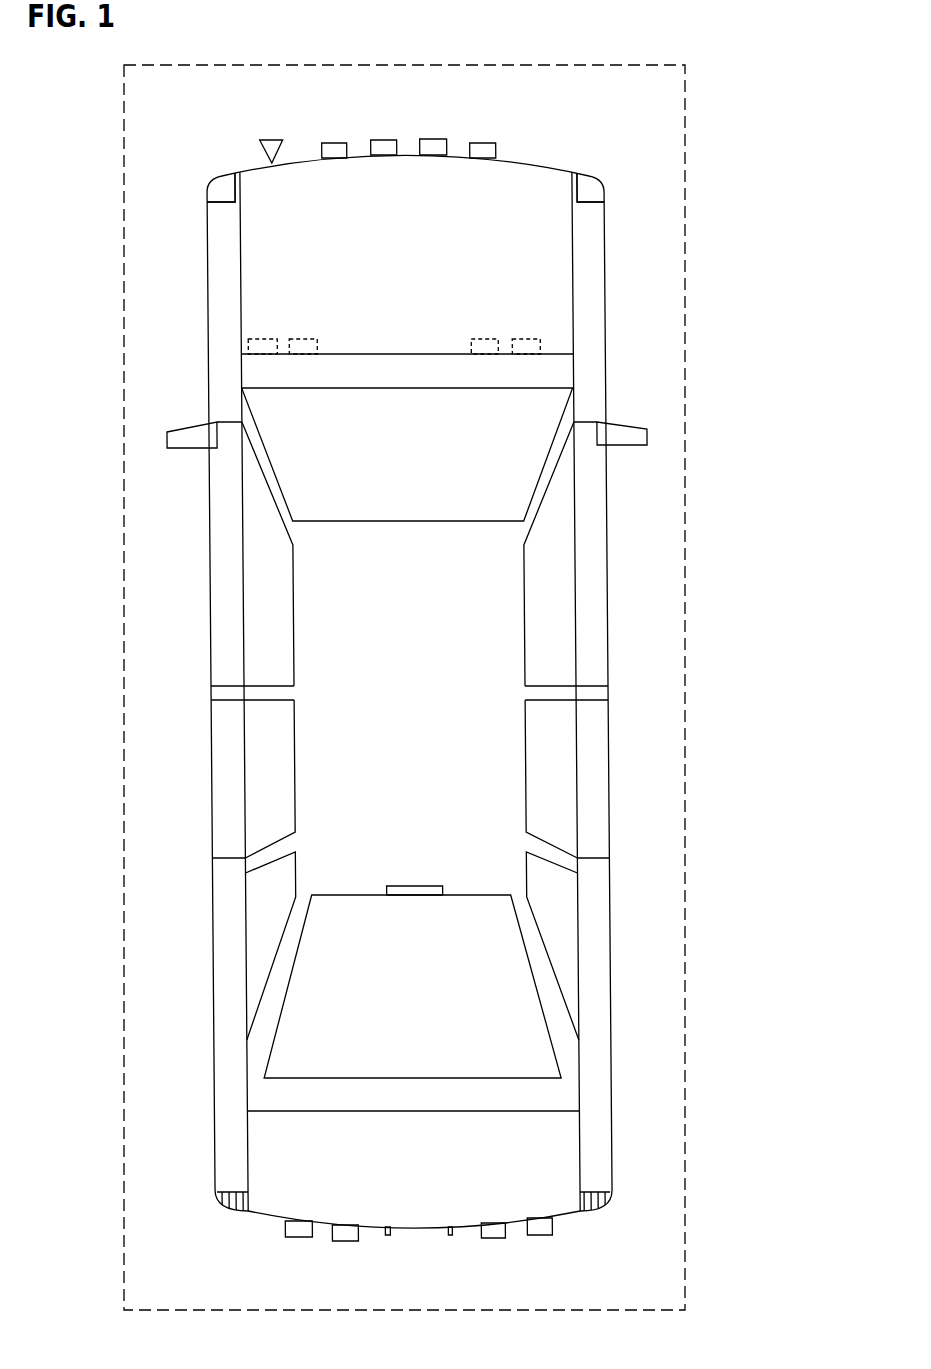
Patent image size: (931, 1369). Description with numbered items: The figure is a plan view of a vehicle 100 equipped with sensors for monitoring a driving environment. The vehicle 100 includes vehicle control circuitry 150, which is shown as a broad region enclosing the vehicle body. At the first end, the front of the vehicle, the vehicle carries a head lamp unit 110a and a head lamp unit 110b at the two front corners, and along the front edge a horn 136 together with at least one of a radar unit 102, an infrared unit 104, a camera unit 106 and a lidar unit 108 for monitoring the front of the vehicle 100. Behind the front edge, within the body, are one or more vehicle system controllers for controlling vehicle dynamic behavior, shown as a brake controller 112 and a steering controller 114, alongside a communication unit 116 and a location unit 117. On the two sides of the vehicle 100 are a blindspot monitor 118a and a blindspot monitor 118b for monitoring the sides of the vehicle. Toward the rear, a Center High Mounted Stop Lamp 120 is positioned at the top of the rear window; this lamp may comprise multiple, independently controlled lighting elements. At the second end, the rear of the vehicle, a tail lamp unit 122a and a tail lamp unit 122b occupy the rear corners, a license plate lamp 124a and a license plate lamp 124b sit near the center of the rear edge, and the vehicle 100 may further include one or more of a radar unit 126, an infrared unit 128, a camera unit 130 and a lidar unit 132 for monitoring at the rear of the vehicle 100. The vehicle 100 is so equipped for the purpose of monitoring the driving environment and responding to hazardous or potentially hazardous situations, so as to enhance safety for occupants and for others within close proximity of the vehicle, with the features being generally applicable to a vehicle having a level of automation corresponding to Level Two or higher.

The vehicle 100 is at (725, 69).
The radar unit 102 is at (332, 142).
The infrared unit 104 is at (387, 139).
The camera unit 106 is at (435, 138).
The lidar unit 108 is at (485, 142).
The head lamp unit 110a is at (217, 177).
The head lamp unit 110b is at (587, 172).
The brake controller 112 is at (252, 338).
The steering controller 114 is at (302, 338).
The communication unit 116 is at (521, 337).
The location unit 117 is at (481, 337).
The blindspot monitor 118a is at (165, 440).
The blindspot monitor 118b is at (645, 437).
The Center High Mounted Stop Lamp (CHMSL) 120 is at (406, 885).
The tail lamp unit 122a is at (215, 1192).
The tail lamp unit 122b is at (594, 1188).
The license plate lamp 124a is at (380, 1227).
The license plate lamp 124b is at (442, 1227).
The radar unit 126 is at (284, 1237).
The infrared unit 128 is at (334, 1241).
The camera unit 130 is at (479, 1238).
The lidar unit 132 is at (529, 1235).
The horn 136 is at (272, 138).
The vehicle control circuitry 150 is at (685, 685).